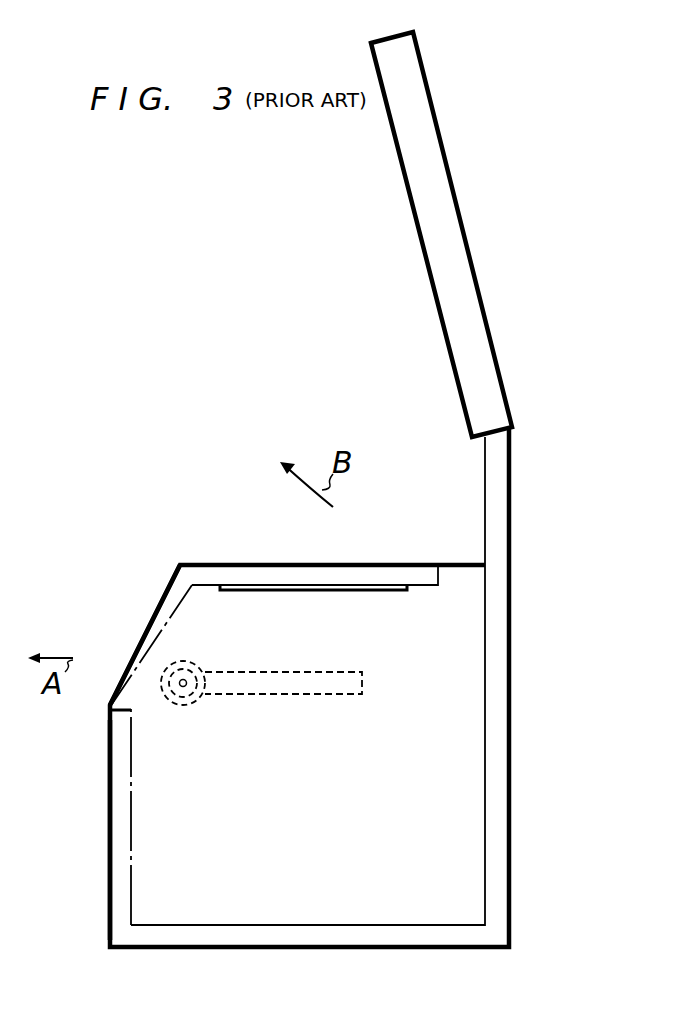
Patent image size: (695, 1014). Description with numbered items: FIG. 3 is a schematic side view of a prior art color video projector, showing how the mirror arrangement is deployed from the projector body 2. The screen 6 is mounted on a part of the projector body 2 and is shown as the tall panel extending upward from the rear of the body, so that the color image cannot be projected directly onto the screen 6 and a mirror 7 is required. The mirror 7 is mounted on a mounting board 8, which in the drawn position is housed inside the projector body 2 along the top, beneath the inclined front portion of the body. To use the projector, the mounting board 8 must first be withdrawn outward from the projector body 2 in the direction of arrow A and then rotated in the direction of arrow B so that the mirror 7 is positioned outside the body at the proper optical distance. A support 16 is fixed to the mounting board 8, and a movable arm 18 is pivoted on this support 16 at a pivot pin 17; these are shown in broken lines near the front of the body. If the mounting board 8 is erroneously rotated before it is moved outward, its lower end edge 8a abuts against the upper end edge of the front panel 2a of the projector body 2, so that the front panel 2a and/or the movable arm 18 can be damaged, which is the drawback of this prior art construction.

The projector body 2 is at (510, 805).
The front panel 2a is at (108, 830).
The screen 6 is at (428, 172).
The mirror 7 is at (320, 592).
The mounting board 8 is at (287, 565).
The lower end edge 8a is at (108, 712).
The support 16 is at (168, 703).
The pivot pin 17 is at (198, 703).
The movable arm 18 is at (290, 696).